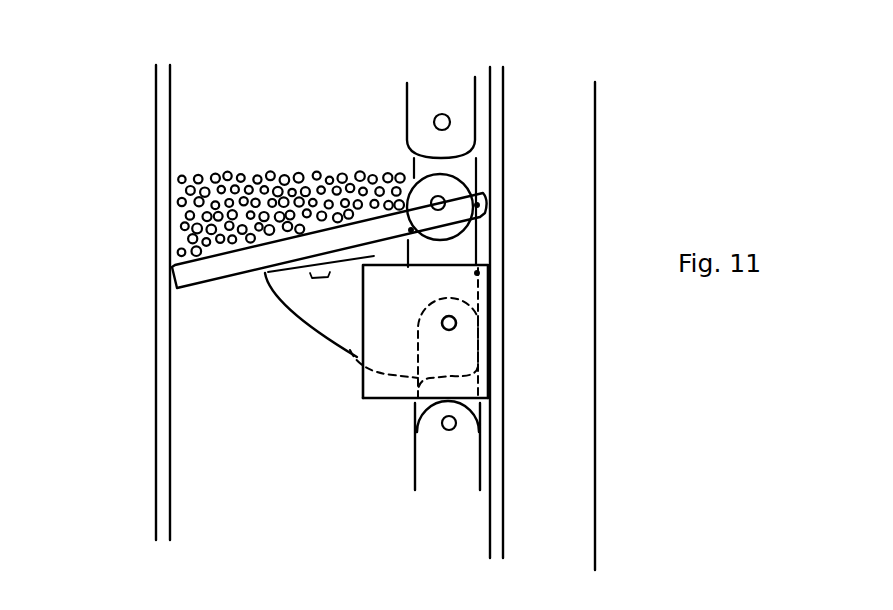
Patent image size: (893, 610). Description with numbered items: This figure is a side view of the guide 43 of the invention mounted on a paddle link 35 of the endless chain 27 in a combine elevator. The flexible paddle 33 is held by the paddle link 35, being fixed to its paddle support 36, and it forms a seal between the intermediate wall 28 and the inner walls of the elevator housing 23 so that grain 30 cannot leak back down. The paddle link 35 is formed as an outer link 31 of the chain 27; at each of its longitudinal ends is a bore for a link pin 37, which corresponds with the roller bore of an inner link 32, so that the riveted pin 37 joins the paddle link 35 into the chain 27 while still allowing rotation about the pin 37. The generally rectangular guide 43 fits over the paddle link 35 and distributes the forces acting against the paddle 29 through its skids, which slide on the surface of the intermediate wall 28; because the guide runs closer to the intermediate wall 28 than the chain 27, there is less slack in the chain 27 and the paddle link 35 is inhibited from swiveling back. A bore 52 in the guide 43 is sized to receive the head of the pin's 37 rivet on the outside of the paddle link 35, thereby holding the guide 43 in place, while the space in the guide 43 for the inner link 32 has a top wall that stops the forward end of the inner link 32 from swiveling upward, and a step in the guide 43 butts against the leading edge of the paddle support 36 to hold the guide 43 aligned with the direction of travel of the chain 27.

The elevator housing 23 is at (162, 127).
The intermediate wall 28 is at (558, 112).
The grain 30 is at (263, 186).
The flexible paddle 33 is at (207, 271).
The link pin 37 is at (484, 192).
The paddle link 35 is at (450, 242).
The paddle support 36 is at (341, 306).
The guide 43 is at (395, 330).
The bore 52 is at (458, 322).
The inner link 32 is at (482, 402).
The outer link 31 is at (460, 469).
The paddle 29 is at (239, 348).
The endless chain 27 is at (387, 473).